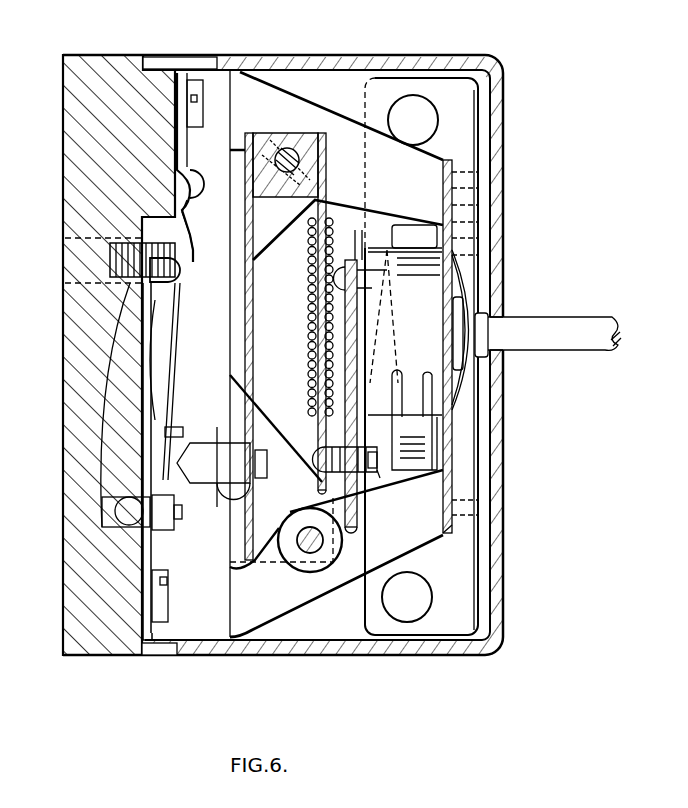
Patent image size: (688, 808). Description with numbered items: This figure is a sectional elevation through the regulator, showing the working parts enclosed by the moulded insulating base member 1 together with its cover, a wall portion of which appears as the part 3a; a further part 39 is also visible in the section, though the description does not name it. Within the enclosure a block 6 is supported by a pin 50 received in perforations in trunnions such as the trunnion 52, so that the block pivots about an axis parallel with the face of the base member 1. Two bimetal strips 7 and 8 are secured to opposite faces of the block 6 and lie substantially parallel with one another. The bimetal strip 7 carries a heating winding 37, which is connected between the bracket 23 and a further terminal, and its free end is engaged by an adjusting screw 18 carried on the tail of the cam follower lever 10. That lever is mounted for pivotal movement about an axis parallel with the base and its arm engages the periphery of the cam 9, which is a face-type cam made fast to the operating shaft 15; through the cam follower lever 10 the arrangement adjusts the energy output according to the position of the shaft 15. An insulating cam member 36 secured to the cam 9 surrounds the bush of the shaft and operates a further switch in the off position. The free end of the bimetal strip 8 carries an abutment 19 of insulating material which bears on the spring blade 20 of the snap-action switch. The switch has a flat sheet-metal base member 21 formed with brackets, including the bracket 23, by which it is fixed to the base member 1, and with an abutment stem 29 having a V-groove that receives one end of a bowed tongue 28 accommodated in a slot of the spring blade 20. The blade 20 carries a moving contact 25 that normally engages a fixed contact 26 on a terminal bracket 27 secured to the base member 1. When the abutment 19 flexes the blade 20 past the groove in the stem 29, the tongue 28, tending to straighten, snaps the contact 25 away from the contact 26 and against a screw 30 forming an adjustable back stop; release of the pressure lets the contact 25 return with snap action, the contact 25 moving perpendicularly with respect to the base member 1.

The base member 1 is at (118, 655).
The cover 3a is at (498, 123).
The block 6 is at (275, 134).
The bimetal strip 7 is at (327, 143).
The bimetal strip 8 is at (249, 134).
The cam 9 is at (420, 309).
The cam follower lever 10 is at (365, 535).
The operating shaft 15 is at (549, 325).
The adjusting screw 18 is at (378, 480).
The abutment 19 is at (203, 490).
The spring blade 20 is at (165, 352).
The base member 21 is at (150, 428).
The bracket 23 is at (152, 553).
The moving contact 25 is at (153, 243).
The fixed contact 26 is at (200, 262).
The terminal bracket 27 is at (185, 75).
The bowed tongue 28 is at (150, 288).
The abutment stem 29 is at (355, 262).
The screw 30 is at (165, 243).
The cam member 36 is at (432, 418).
The heating winding 37 is at (335, 224).
The diaphragm 39 is at (468, 375).
The pin 50 is at (292, 172).
The trunnion 52 is at (405, 172).